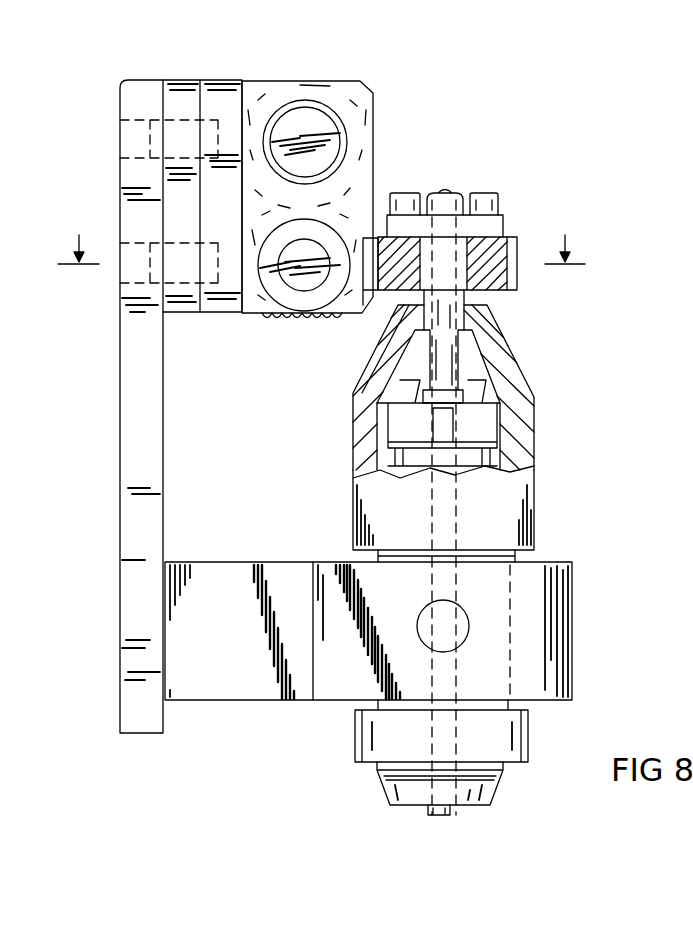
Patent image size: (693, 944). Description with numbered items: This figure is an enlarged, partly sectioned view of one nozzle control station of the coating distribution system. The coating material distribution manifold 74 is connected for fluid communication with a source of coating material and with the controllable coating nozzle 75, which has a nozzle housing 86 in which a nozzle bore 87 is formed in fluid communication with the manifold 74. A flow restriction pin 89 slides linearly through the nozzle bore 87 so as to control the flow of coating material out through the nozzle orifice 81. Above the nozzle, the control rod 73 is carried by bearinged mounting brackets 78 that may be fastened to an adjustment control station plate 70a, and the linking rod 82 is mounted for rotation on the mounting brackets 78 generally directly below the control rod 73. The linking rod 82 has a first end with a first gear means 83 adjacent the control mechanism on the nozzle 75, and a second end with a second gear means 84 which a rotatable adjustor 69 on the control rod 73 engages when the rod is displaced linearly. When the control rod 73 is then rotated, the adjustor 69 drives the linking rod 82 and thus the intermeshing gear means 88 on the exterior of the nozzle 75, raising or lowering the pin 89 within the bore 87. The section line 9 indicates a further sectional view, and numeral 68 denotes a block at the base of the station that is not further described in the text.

The section line 9- 9 is at (321, 267).
The base block 68 is at (268, 702).
The rotatable adjustor 69 is at (347, 100).
The adjustment control station plate 70a is at (147, 736).
The control rod 73 is at (303, 122).
The coating material distribution manifold 74 is at (573, 590).
The controllable coating nozzle 75 is at (536, 400).
The bearinged mounting bracket 78 is at (242, 82).
The nozzle orifice 81 is at (424, 808).
The linking rod 82 is at (302, 278).
The first gear means 83 is at (273, 322).
The second gear means 84 is at (366, 284).
The nozzle housing 86 is at (528, 732).
The nozzle bore 87 is at (447, 494).
The intermeshing gear means 88 is at (518, 247).
The flow restriction pin 89 is at (450, 812).